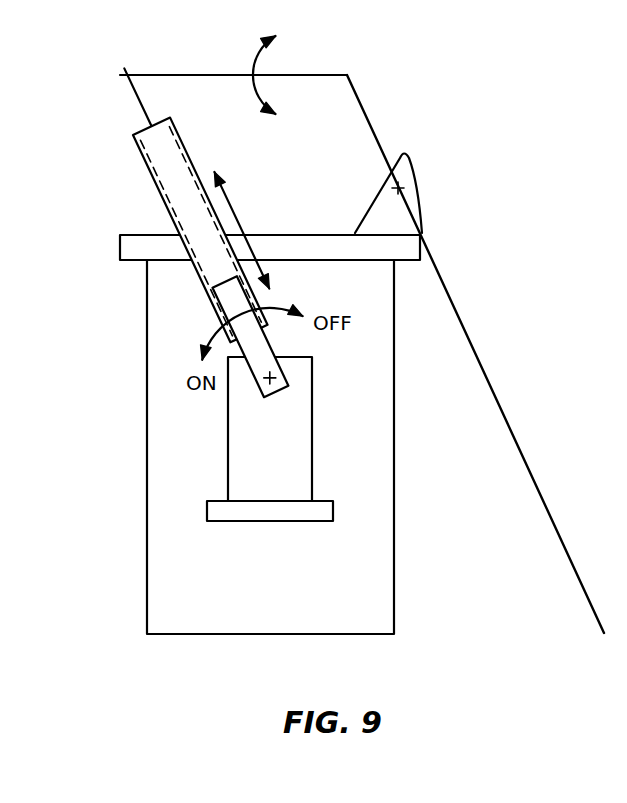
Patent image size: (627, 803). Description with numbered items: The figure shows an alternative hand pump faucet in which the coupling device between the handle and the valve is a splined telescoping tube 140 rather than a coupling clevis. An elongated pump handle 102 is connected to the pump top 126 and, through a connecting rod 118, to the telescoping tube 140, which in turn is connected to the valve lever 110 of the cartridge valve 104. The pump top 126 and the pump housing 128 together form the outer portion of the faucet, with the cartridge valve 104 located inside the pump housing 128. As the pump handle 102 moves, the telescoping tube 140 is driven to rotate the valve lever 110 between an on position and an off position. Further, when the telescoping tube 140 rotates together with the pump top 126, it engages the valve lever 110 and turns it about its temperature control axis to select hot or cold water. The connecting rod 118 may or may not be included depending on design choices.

The pump handle 102 is at (526, 460).
The cartridge valve 104 is at (300, 441).
The valve lever 110 is at (262, 347).
The connecting rod 118 is at (140, 102).
The pump top 126 is at (145, 235).
The pump housing 128 is at (147, 438).
The splined telescoping tube 140 is at (142, 159).